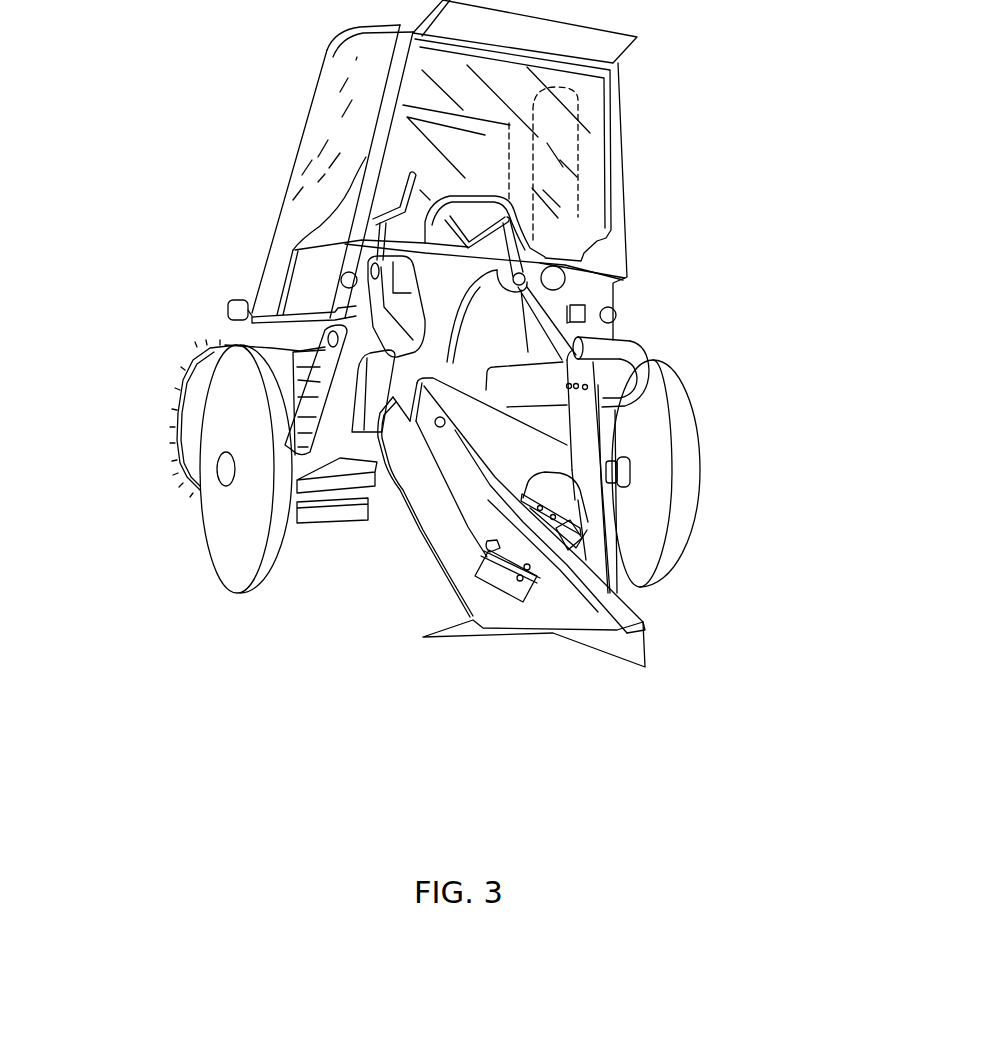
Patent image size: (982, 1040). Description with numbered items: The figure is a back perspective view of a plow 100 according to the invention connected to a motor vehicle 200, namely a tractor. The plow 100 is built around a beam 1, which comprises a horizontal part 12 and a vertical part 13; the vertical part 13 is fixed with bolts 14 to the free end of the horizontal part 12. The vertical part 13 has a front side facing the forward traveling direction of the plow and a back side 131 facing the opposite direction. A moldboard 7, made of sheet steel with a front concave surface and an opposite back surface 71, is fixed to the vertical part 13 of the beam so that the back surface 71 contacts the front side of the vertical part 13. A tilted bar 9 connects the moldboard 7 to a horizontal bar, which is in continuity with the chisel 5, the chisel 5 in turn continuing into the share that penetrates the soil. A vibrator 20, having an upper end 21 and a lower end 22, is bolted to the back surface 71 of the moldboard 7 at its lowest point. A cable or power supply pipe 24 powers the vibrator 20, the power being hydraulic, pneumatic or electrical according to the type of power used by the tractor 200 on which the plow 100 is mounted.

The motor vehicle 200 is at (632, 113).
The plow 100 is at (465, 523).
The beam 1 is at (601, 372).
The horizontal part 12 is at (511, 378).
The vertical part 13 is at (599, 407).
The back side 131 is at (583, 437).
The bolts 14 is at (588, 387).
The chisel 5 is at (620, 648).
The moldboard 7 is at (413, 522).
The back surface 71 is at (450, 547).
The tilted bar 9 is at (492, 485).
The vibrator 20 is at (580, 531).
The upper end 21 is at (572, 504).
The lower end 22 is at (505, 609).
The cable or power supply pipe 24 is at (612, 478).